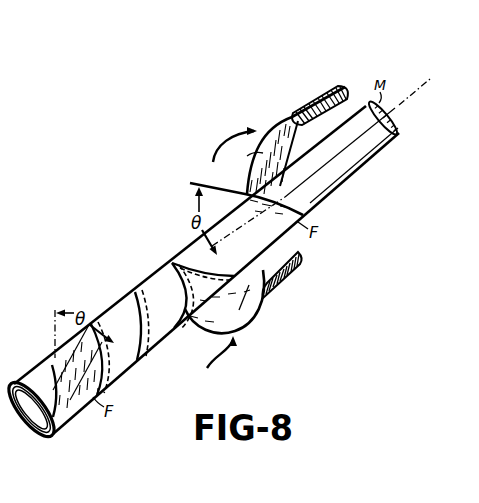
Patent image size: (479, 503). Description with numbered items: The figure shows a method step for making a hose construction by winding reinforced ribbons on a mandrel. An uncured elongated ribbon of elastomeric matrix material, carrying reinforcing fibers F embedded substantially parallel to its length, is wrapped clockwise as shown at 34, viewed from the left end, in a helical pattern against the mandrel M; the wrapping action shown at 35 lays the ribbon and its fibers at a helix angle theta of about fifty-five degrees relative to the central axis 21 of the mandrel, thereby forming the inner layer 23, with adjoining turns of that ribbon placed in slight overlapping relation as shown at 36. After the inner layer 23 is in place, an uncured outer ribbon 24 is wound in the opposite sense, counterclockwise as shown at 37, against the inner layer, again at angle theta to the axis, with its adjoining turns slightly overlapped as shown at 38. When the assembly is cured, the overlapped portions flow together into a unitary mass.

The axis 21 is at (398, 103).
The inner layer 23 is at (306, 101).
The outer ribbon 24 is at (283, 294).
The clockwise wrapping direction 34 is at (224, 140).
The winding action 35 is at (263, 112).
The overlap of inner ribbon turns 36 is at (189, 255).
The counterclockwise winding direction 37 is at (224, 319).
The overlap of outer ribbon turns 38 is at (147, 294).